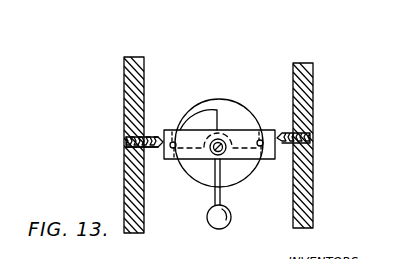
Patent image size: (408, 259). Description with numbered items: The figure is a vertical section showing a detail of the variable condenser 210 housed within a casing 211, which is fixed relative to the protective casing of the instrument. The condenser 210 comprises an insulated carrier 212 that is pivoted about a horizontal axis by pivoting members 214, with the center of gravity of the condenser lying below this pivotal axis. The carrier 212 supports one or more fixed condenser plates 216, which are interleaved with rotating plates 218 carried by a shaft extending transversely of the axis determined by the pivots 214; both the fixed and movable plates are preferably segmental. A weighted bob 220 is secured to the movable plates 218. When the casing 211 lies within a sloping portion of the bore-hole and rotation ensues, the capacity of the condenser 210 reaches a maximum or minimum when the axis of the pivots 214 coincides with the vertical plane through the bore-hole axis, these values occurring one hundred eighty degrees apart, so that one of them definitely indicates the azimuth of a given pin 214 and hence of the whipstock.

The variable condenser 210 is at (250, 83).
The casing 211 is at (313, 87).
The insulated carrier 212 is at (260, 160).
The pivoting members 214 is at (126, 141).
The fixed condenser plates 216 is at (213, 102).
The rotating plates 218 is at (202, 170).
The weighted bob 220 is at (218, 229).